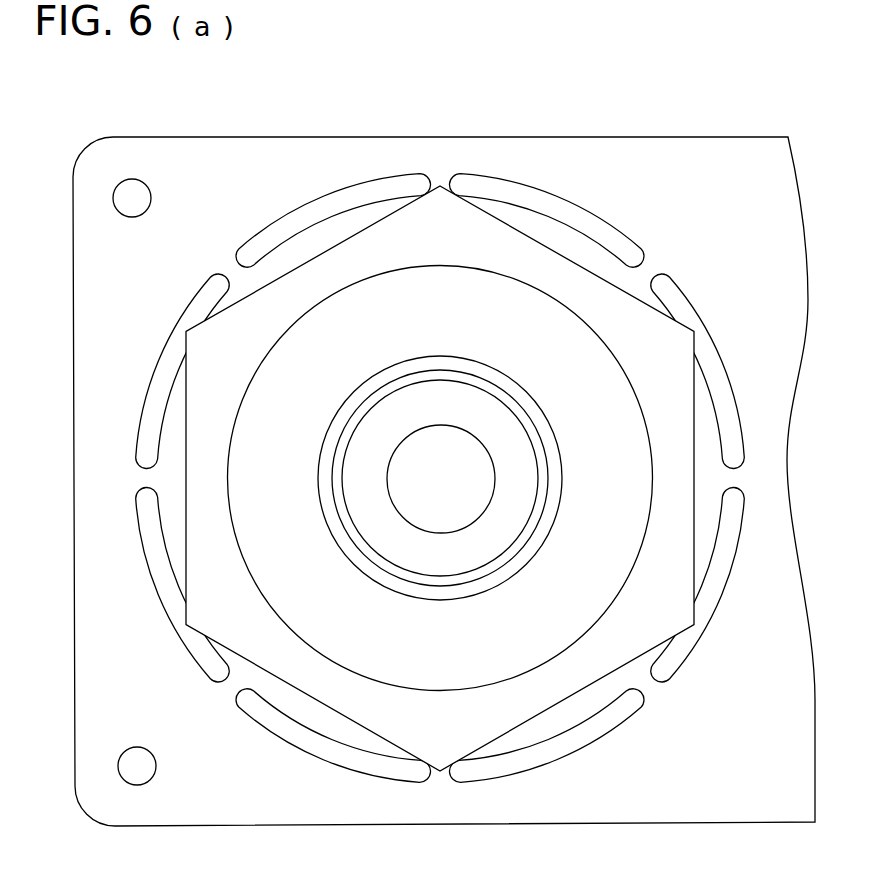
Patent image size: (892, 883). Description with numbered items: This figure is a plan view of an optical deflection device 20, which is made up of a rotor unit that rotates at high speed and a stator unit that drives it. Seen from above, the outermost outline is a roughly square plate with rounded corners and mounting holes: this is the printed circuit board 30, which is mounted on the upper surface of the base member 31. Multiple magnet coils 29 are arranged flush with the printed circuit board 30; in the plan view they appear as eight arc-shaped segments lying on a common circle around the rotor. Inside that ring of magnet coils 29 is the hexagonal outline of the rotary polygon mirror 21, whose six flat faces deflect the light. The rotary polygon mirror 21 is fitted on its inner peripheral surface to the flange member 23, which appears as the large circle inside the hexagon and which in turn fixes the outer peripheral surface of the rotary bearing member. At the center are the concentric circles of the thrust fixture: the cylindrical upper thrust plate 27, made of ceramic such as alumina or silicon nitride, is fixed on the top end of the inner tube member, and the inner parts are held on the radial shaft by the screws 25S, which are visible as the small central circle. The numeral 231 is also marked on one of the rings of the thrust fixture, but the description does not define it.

The optical deflection device 20 is at (617, 128).
The rotary polygon mirror 21 is at (390, 240).
The flange member 23 is at (467, 213).
The bearing outer ring 231 is at (537, 412).
The screws 25S is at (485, 463).
The upper thrust plate 27 is at (530, 493).
The magnet coil 29 is at (573, 203).
The printed circuit board 30 is at (710, 148).
The base member 31 is at (444, 481).